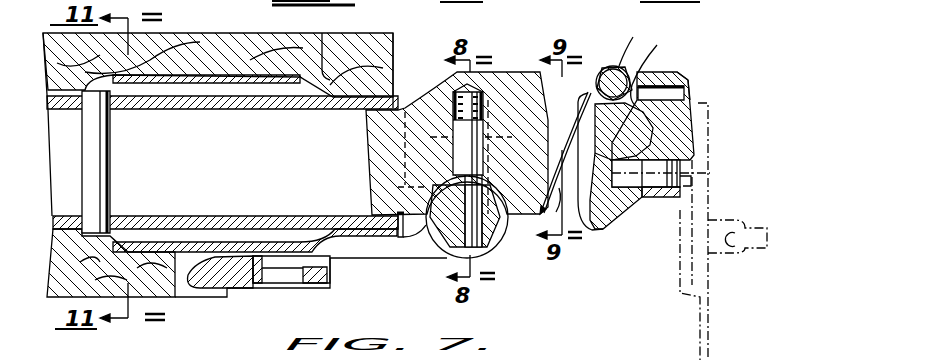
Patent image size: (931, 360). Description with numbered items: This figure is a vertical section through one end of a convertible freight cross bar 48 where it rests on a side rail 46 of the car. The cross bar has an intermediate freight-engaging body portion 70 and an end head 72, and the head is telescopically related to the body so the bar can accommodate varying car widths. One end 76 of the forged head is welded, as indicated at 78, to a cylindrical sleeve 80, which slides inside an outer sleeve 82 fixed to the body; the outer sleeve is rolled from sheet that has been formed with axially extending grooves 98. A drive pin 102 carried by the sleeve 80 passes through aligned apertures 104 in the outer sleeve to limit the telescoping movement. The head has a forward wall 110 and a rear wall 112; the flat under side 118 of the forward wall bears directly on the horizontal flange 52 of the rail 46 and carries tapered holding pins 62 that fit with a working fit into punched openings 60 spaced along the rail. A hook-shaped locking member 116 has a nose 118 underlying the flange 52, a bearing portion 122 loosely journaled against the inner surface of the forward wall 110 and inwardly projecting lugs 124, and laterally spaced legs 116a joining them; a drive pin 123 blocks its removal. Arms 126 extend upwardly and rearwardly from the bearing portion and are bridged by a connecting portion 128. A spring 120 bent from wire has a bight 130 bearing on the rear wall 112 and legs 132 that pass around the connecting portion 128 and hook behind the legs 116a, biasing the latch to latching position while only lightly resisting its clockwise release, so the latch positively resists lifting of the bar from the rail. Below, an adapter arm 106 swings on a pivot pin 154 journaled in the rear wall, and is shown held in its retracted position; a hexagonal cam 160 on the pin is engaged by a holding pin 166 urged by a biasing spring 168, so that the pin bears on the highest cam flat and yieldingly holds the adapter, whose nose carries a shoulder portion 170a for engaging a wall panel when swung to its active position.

The side rail 46 is at (712, 206).
The cross bar 48 is at (183, 31).
The horizontal flange 52 is at (687, 184).
The punched opening 60 is at (682, 172).
The holding pin 62 is at (658, 198).
The body portion 70 is at (264, 32).
The end head 72 is at (690, 68).
The head end 76 is at (366, 152).
The weld 78 is at (407, 234).
The cylindrical sleeve 80 is at (257, 106).
The outer sleeve 82 is at (394, 66).
The axially extending groove 98 is at (184, 84).
The drive pin 102 is at (103, 163).
The aperture 104 is at (322, 32).
The adapter arm 106 is at (357, 260).
The forward wall 110 is at (690, 107).
The rear wall 112 is at (658, 68).
The locking member 116 is at (605, 234).
The leg 116a is at (579, 116).
The nose 118 is at (613, 152).
The spring 120 is at (559, 188).
The bearing portion 122 is at (645, 73).
The drive pin 123 is at (692, 79).
The lug 124 is at (586, 88).
The arm 126 is at (628, 126).
The connecting portion 128 is at (638, 44).
The bight 130 is at (512, 222).
The spring leg 132 is at (557, 124).
The pivot pin 154 is at (449, 254).
The hexagonal cam 160 is at (441, 182).
The holding pin 166 is at (497, 160).
The biasing spring 168 is at (488, 86).
The shoulder portion 170a is at (227, 292).